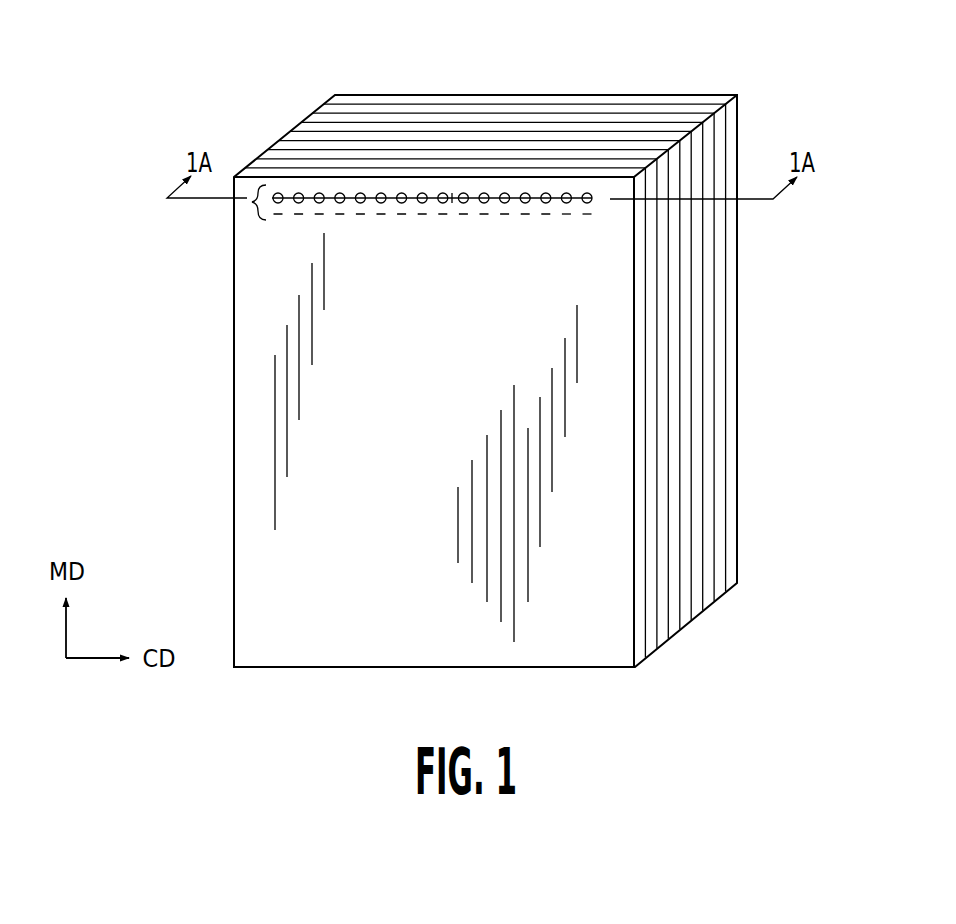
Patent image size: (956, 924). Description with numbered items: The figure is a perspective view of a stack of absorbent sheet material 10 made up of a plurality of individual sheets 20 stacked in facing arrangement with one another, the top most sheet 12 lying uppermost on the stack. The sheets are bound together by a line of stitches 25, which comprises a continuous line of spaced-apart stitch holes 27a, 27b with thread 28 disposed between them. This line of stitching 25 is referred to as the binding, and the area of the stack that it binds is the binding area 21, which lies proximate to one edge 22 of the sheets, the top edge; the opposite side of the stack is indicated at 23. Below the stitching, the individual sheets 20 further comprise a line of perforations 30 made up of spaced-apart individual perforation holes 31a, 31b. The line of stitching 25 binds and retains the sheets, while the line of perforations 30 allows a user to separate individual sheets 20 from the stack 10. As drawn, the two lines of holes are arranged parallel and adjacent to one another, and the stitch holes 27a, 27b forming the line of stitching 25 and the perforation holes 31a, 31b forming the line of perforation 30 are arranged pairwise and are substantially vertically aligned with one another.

The stack of absorbent sheet material 10 is at (735, 61).
The top most sheet 12 is at (422, 400).
The individual sheets 20 is at (683, 639).
The binding area 21 is at (250, 202).
The edge 22 is at (296, 174).
The bottom edge 23 is at (589, 676).
The line of stitches 25 is at (597, 195).
The stitch hole 27a is at (445, 193).
The stitch hole 27b is at (461, 193).
The thread 28 is at (452, 193).
The line of perforations 30 is at (600, 215).
The perforation hole 31a is at (587, 217).
The perforation hole 31b is at (567, 217).